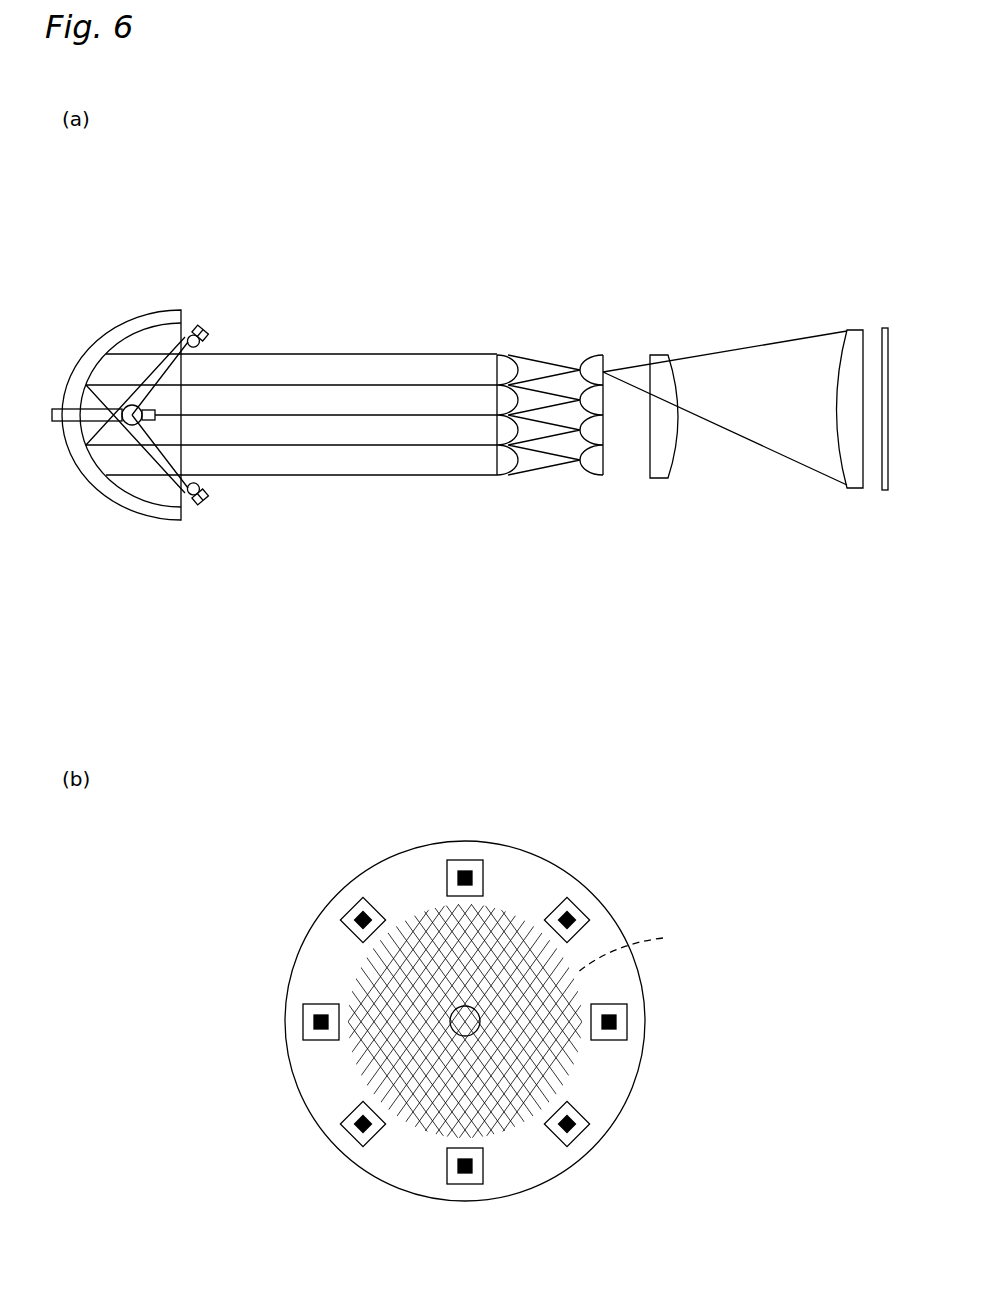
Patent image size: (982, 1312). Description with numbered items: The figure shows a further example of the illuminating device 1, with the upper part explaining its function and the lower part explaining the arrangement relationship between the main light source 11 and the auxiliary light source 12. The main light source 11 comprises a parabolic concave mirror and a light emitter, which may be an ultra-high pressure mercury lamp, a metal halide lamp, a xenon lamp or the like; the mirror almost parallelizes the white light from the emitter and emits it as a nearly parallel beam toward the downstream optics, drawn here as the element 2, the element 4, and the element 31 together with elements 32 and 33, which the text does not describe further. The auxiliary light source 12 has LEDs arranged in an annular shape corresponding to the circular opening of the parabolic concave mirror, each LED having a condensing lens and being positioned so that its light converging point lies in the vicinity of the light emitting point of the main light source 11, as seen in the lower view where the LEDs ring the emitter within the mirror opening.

The illuminating device 1 is at (313, 289).
The main light source 11 is at (115, 309).
The auxiliary light source 12 is at (193, 306).
The lens array (integrator) 2 is at (605, 348).
The condenser lens 4 is at (660, 355).
The projection optical system 31 is at (884, 327).
The lens 32 is at (850, 409).
The light valve / plate 33 is at (885, 409).